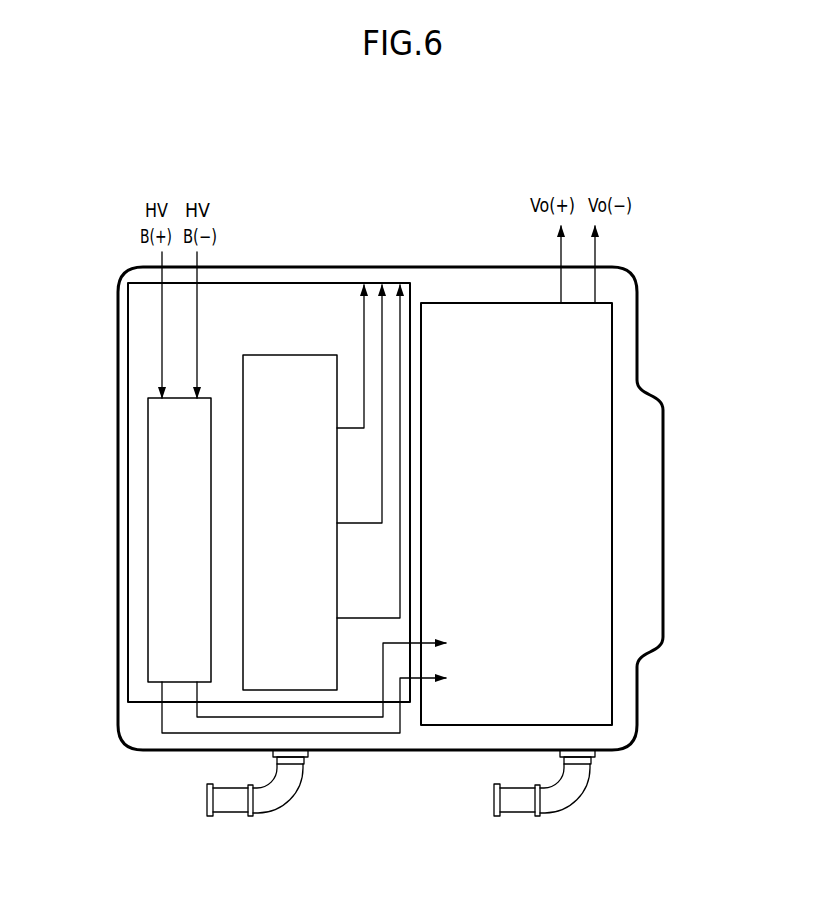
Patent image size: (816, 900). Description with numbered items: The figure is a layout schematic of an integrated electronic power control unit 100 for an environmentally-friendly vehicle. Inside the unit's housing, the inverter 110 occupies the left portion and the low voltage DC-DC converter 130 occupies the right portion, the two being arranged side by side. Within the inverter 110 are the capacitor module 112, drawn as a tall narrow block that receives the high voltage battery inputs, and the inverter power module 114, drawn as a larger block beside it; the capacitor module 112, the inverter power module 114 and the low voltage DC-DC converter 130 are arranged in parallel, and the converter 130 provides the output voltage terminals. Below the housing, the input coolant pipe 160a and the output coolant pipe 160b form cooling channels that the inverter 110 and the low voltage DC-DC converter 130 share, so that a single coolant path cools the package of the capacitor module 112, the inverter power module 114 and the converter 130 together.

The integrated electronic power control unit 100 is at (641, 348).
The inverter 110 is at (127, 490).
The capacitor module 112 is at (147, 648).
The inverter power module 114 is at (242, 672).
The low voltage DC-DC converter 130 is at (612, 515).
The input coolant pipe 160a is at (232, 806).
The output coolant pipe 160b is at (518, 806).